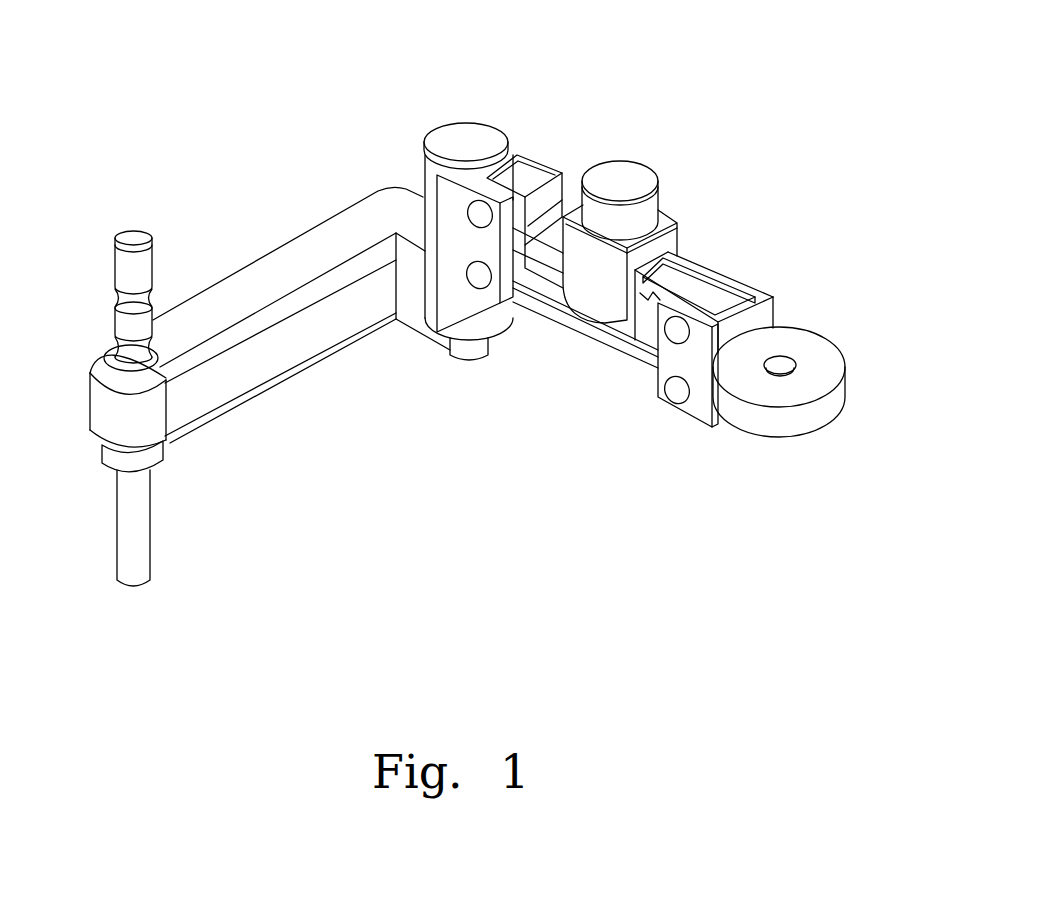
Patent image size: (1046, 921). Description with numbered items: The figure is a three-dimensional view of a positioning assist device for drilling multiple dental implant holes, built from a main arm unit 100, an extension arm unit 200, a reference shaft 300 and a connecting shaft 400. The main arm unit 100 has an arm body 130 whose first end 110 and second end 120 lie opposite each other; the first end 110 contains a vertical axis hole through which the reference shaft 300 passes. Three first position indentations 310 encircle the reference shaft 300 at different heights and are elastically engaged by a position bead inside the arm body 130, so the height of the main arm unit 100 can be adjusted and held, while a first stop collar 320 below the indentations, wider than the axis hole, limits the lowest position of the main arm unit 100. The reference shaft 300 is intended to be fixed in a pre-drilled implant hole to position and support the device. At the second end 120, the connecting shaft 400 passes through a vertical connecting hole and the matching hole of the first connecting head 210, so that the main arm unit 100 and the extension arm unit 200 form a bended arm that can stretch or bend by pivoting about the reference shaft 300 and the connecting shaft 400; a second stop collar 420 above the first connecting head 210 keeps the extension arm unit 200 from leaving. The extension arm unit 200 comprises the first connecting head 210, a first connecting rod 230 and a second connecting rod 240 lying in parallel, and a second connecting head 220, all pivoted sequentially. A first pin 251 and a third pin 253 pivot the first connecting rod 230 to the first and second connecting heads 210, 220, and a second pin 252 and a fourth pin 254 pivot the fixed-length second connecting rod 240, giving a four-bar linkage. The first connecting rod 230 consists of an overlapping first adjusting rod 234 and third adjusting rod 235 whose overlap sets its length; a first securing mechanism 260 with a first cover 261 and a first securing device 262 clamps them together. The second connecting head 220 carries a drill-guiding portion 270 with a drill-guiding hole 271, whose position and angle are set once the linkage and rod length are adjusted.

The main arm unit 100 is at (278, 218).
The first end 110 is at (98, 408).
The second end 120 is at (502, 323).
The arm body 130 is at (214, 307).
The extension arm unit 200 is at (697, 116).
The first connecting head 210 is at (523, 135).
The second connecting head 220 is at (767, 281).
The first connecting rod 230 is at (699, 250).
The first adjusting rod 234 is at (523, 197).
The third adjusting rod 235 is at (688, 270).
The second connecting rod 240 is at (598, 330).
The first pin 251 is at (475, 212).
The second pin 252 is at (473, 273).
The third pin 253 is at (675, 334).
The fourth pin 254 is at (675, 398).
The first securing mechanism 260 is at (667, 193).
The first cover 261 is at (680, 232).
The first securing device 262 is at (640, 172).
The drill-guiding portion 270 is at (817, 336).
The drill-guiding hole 271 is at (780, 370).
The reference shaft 300 is at (168, 478).
The first position indentations 310 is at (118, 292).
The first stop collar 320 is at (120, 462).
The connecting shaft 400 is at (497, 118).
The second stop collar 420 is at (452, 126).